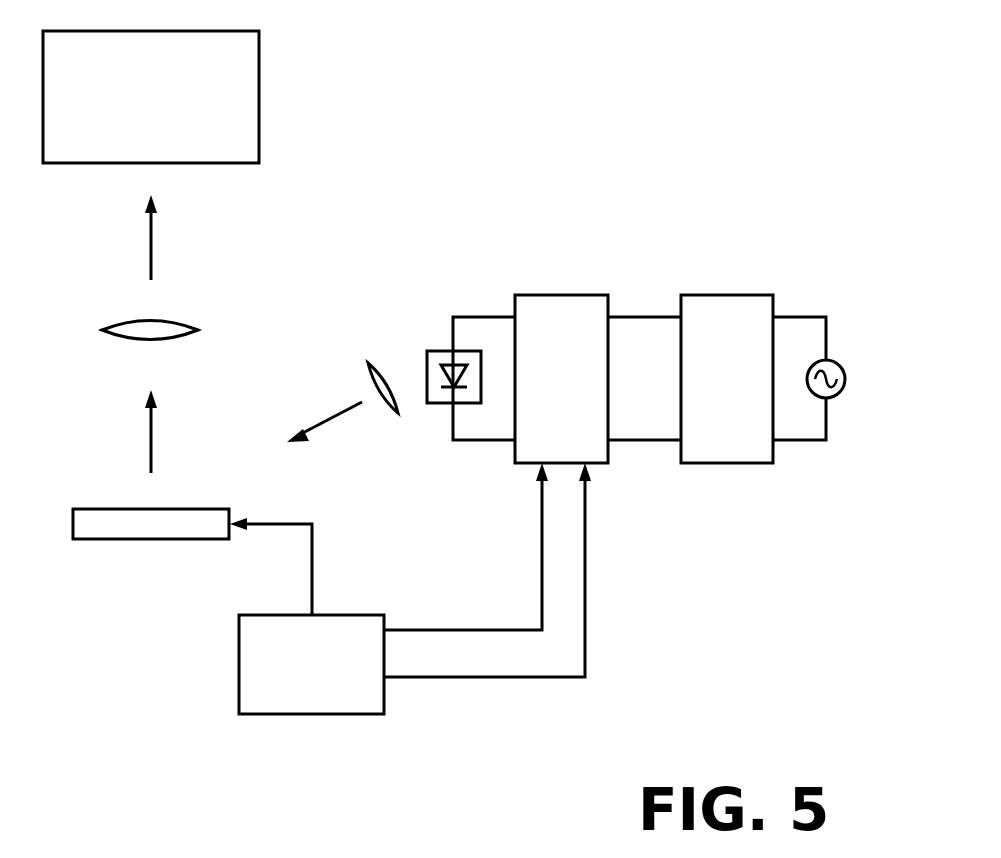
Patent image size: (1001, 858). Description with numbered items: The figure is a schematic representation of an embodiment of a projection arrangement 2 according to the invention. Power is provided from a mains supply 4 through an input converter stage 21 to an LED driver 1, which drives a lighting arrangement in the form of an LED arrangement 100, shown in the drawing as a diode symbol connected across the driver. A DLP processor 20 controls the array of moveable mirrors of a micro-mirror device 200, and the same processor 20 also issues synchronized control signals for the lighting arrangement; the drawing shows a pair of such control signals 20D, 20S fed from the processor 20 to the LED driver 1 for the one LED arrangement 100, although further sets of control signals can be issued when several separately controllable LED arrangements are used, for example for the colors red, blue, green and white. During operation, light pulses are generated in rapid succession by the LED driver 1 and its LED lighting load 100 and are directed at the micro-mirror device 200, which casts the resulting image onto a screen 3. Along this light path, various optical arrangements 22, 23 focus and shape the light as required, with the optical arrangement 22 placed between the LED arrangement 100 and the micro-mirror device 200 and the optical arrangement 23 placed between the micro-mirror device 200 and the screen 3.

The LED driver 1 is at (555, 303).
The projection arrangement 2 is at (652, 167).
The screen 3 is at (245, 49).
The mains supply 4 is at (840, 360).
The DLP processor 20 is at (300, 705).
The control signal 20D is at (540, 595).
The control signal 20S is at (586, 595).
The input converter stage 21 is at (716, 305).
The optical arrangement 22 is at (392, 405).
The optical arrangement 23 is at (125, 326).
The LED arrangement 100 is at (447, 350).
The micro-mirror device 200 is at (108, 518).